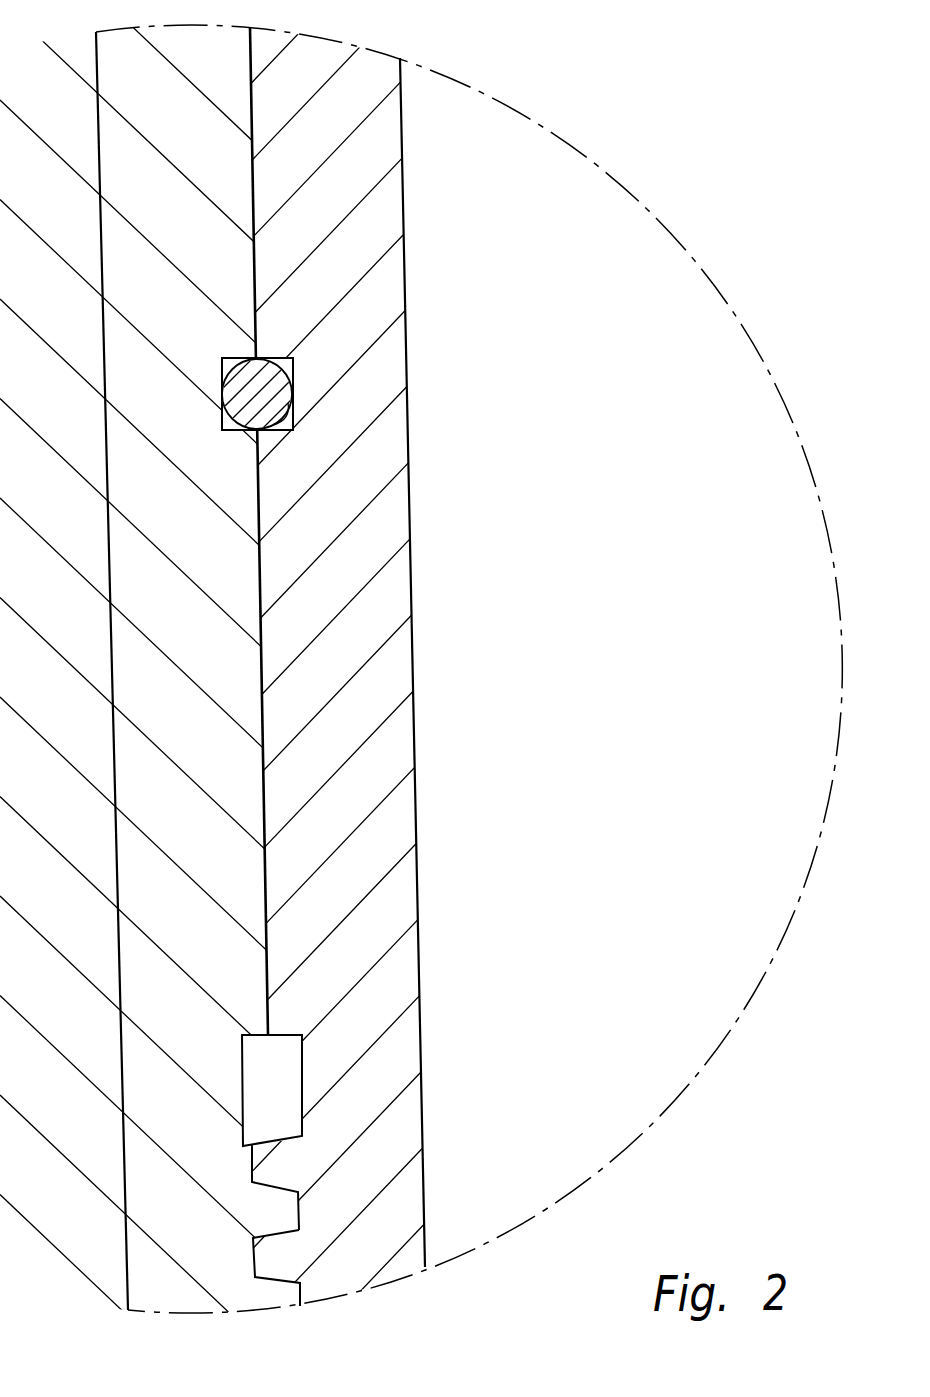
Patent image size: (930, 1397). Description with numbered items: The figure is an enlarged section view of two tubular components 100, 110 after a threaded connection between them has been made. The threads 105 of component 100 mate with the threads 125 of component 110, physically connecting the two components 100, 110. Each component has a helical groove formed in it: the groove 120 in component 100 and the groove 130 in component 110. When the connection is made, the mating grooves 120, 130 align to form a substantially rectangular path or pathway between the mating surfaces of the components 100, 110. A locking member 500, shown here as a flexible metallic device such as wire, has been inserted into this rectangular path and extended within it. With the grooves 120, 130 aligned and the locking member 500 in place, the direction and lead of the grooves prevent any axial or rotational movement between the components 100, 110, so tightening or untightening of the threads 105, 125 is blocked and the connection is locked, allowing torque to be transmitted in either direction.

The component 100 is at (108, 228).
The component 110 is at (393, 218).
The helical groove 120 is at (238, 357).
The locking member 500 is at (277, 385).
The helical groove 130 is at (282, 427).
The threads 105 is at (248, 1165).
The threads 125 is at (298, 1214).